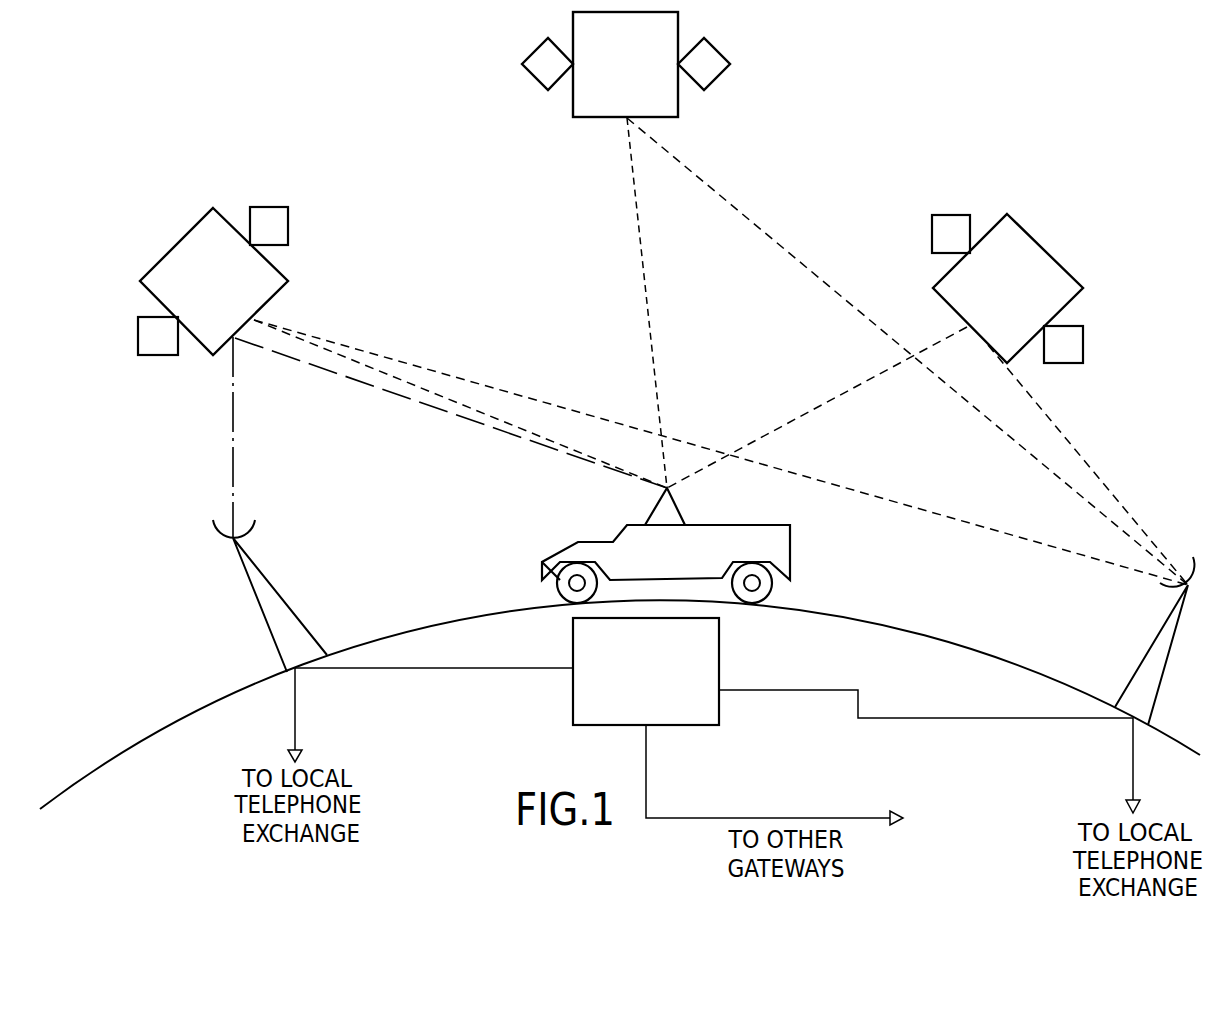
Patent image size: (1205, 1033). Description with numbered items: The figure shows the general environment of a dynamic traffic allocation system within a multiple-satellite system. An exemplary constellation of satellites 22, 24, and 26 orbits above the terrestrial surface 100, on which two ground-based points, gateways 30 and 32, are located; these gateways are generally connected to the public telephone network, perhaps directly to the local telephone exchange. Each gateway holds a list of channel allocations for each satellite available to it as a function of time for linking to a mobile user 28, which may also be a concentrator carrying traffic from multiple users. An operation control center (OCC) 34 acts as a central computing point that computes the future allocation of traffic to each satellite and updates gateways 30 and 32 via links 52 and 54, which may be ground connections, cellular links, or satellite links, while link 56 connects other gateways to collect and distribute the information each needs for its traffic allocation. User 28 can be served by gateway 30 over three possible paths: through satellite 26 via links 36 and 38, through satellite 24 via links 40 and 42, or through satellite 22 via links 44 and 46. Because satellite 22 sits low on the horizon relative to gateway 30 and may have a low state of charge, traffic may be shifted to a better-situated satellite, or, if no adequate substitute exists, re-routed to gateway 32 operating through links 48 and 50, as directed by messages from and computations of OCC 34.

The satellite 22 is at (230, 292).
The satellite 24 is at (640, 77).
The satellite 26 is at (1024, 295).
The mobile user 28 is at (691, 562).
The gateway 30 is at (1143, 662).
The gateway 32 is at (271, 584).
The operation control center (OCC) 34 is at (660, 702).
The link 36 is at (1075, 448).
The link 38 is at (822, 405).
The link 40 is at (752, 219).
The link 42 is at (645, 276).
The link 44 is at (990, 528).
The link 46 is at (502, 420).
The link 48 is at (234, 424).
The link 50 is at (350, 379).
The link 52 is at (490, 669).
The link 54 is at (770, 690).
The link 56 is at (766, 818).
The terrestrial surface 100 is at (212, 703).